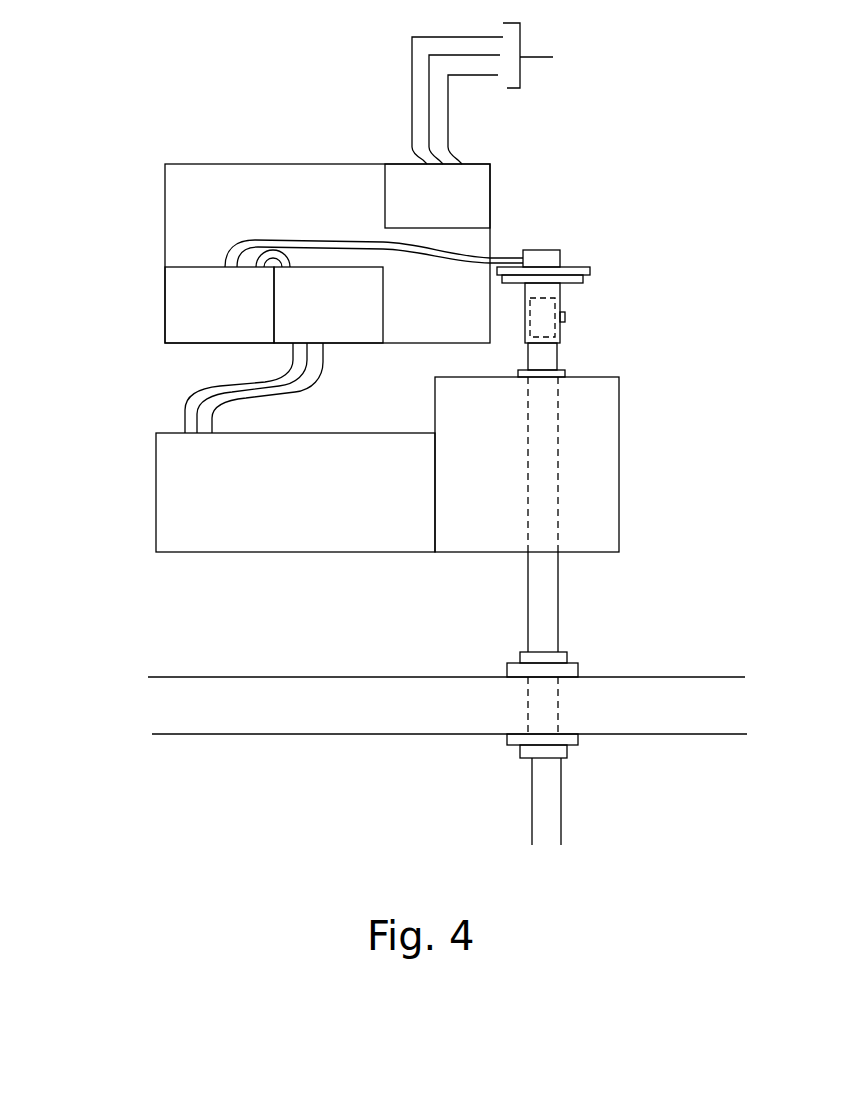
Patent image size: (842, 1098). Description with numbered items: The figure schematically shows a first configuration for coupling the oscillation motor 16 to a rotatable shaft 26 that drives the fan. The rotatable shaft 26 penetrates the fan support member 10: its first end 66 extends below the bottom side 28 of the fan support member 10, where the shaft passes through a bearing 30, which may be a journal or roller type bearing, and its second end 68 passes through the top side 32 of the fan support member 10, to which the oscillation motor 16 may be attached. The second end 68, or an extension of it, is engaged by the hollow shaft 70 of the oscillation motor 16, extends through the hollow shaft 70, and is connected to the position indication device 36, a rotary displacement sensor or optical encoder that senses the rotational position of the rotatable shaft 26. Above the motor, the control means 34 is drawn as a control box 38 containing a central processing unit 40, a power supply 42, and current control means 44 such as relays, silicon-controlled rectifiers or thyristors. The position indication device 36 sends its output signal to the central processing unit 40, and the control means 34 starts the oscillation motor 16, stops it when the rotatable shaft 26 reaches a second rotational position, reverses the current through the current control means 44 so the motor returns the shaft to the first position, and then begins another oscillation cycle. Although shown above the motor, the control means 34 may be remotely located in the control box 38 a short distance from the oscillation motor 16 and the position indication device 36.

The fan support member 10 is at (153, 700).
The oscillation motor 16 is at (258, 508).
The rotatable shaft 26 is at (583, 797).
The bottom side of fan support member 28 is at (313, 734).
The bearing 30 is at (578, 743).
The top side of fan support member 32 is at (298, 677).
The control means 34 is at (130, 342).
The position indication device 36 is at (575, 267).
The control box 38 is at (165, 192).
The central processing unit 40 is at (208, 322).
The power supply 42 is at (425, 207).
The current control means 44 is at (322, 322).
The first end of rotatable shaft 66 is at (533, 765).
The second end of rotatable shaft 68 is at (560, 353).
The hollow shaft 70 is at (560, 500).